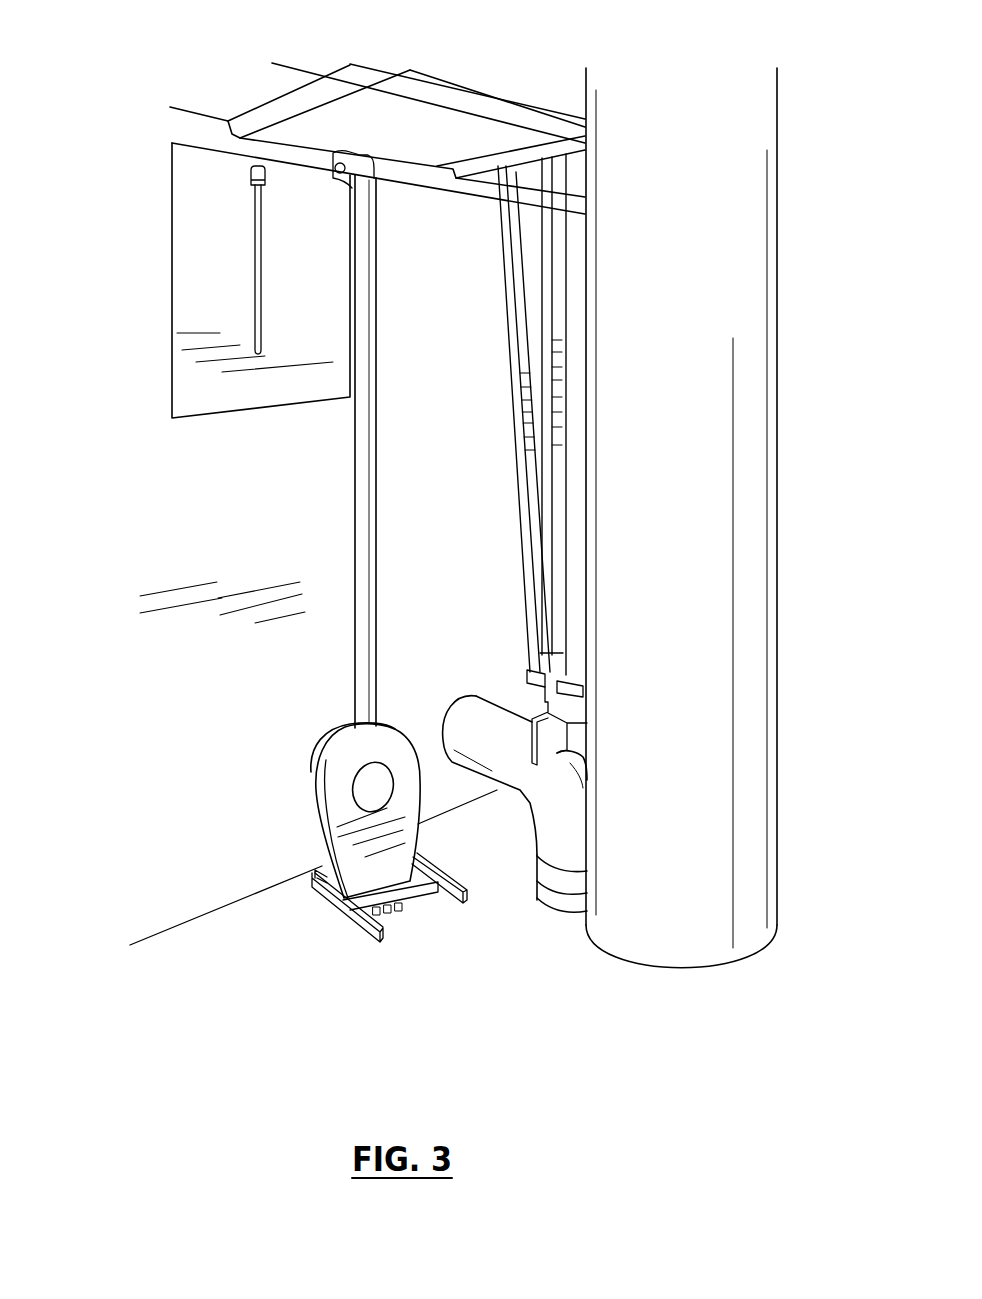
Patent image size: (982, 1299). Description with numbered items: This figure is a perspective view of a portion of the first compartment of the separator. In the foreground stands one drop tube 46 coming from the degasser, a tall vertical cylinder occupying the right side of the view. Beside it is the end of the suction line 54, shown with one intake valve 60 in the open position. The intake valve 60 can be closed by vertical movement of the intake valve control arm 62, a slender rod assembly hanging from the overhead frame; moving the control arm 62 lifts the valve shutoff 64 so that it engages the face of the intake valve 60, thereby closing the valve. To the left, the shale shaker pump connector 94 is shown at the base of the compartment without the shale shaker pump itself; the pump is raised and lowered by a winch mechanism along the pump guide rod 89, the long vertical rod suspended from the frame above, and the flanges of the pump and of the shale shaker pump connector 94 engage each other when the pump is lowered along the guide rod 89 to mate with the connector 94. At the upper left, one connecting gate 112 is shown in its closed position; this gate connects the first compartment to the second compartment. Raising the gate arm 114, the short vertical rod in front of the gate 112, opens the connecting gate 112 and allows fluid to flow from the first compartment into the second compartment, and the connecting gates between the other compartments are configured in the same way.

The drop tube 46 is at (733, 607).
The suction line 54 is at (315, 752).
The intake valve 60 is at (563, 888).
The intake valve control arm 62 is at (516, 292).
The valve shutoff 64 is at (553, 902).
The pump guide rod 89 is at (362, 278).
The shale shaker pump connector 94 is at (318, 874).
The connecting gate 112 is at (197, 376).
The gate arm 114 is at (253, 222).